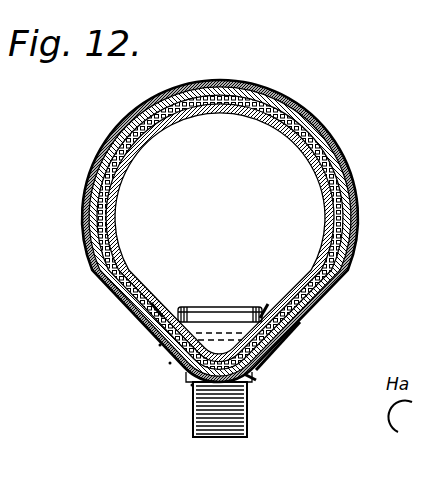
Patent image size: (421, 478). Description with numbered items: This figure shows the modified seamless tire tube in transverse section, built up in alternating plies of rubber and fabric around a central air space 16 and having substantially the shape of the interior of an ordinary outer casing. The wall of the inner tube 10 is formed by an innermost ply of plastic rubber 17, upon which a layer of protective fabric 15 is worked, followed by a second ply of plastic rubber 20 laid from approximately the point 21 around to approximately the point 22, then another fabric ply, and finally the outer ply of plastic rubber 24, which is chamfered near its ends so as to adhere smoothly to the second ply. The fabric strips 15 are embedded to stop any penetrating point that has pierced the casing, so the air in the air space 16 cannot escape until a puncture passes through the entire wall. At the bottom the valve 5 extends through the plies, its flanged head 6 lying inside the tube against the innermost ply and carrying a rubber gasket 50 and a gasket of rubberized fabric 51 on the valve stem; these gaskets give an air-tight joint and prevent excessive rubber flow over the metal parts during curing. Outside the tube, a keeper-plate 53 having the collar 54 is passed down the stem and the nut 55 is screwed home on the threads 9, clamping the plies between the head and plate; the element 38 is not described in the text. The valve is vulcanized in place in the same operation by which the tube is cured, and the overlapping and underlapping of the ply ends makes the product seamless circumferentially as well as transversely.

The valve 5 is at (252, 403).
The flanged head 6 is at (204, 307).
The threads 9 is at (248, 418).
The inner tube 10 is at (323, 193).
The fabric strip 15 is at (310, 131).
The air space 16 is at (220, 218).
The innermost ply of plastic rubber 17 is at (116, 243).
The second ply of plastic rubber 20 is at (85, 192).
The point 21 is at (272, 323).
The point 22 is at (250, 376).
The outer ply of plastic rubber 24 is at (88, 222).
The rubber layer 38 is at (268, 358).
The rubber gasket 50 is at (266, 308).
The gasket of rubberized fabric 51 is at (156, 312).
The keeper-plate 53 is at (170, 363).
The collar 54 is at (160, 345).
The nut 55 is at (192, 385).